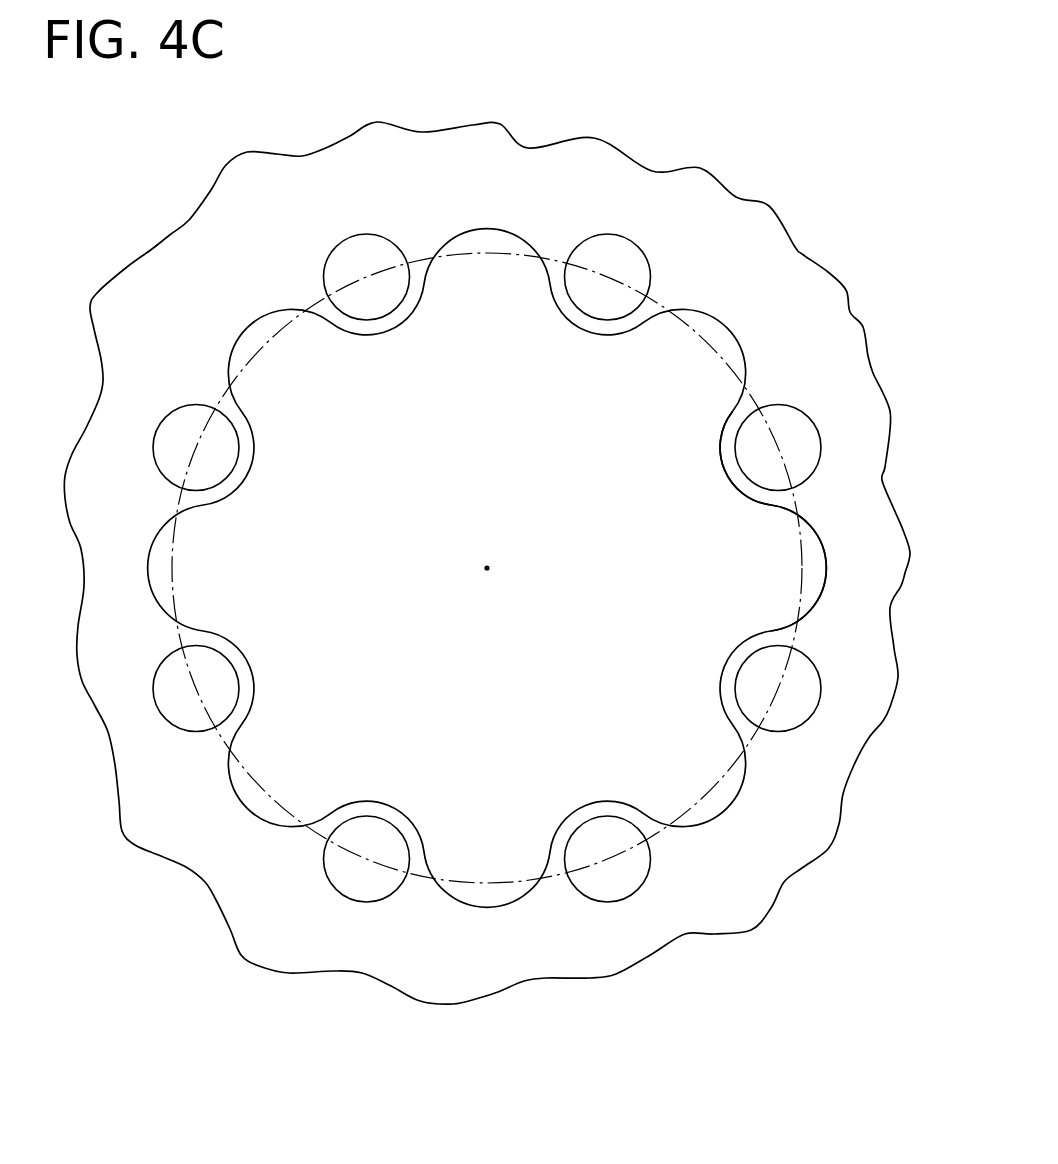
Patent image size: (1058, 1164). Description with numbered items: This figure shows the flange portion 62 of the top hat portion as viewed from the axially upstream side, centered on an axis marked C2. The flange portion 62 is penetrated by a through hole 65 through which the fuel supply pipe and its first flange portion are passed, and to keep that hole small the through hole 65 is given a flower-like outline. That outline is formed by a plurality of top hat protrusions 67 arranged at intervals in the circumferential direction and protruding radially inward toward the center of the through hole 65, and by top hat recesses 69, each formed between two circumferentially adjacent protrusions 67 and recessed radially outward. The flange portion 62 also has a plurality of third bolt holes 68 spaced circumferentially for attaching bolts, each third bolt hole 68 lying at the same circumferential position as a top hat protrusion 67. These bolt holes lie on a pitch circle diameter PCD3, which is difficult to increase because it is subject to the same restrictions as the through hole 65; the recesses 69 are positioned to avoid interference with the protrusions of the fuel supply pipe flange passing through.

The flange portion 62 is at (799, 285).
The through hole 65 is at (623, 441).
The top hat protrusion 67 is at (755, 492).
The third bolt hole 68 is at (795, 424).
The top hat recess 69 is at (826, 566).
The pitch circle diameter PCD3 is at (667, 283).
The center axis C2 is at (488, 566).